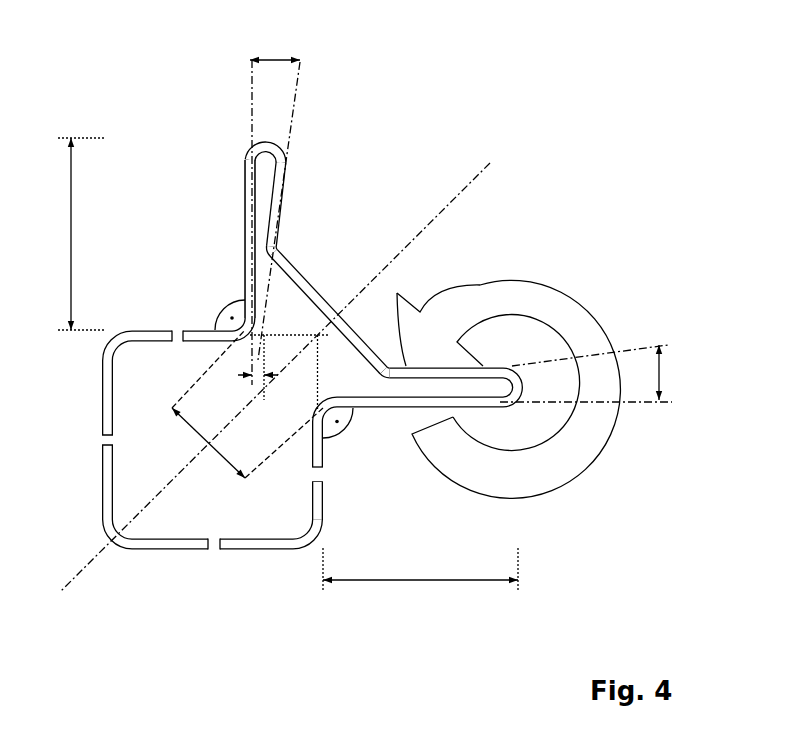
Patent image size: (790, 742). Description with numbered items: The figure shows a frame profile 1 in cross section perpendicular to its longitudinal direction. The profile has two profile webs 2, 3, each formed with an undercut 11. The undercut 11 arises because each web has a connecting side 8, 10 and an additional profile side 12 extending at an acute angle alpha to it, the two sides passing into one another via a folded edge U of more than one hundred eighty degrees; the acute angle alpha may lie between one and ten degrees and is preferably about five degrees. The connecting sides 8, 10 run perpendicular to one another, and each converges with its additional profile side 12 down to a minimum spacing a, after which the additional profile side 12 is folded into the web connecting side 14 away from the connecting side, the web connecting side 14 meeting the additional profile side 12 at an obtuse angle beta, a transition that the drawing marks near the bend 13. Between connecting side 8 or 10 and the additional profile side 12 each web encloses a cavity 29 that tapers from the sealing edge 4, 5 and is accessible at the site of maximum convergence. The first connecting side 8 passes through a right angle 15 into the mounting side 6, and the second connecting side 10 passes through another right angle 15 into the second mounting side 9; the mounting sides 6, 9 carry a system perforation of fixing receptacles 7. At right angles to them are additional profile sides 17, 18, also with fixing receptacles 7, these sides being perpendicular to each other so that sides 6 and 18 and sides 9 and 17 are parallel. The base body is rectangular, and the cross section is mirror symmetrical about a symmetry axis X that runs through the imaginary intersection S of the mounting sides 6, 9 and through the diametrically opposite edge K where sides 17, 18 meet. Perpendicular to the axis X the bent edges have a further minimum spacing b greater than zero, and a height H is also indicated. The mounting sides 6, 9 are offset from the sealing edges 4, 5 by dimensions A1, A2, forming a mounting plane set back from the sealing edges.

The frame profile 1 is at (400, 115).
The profile web 2 is at (220, 175).
The profile web 3 is at (407, 437).
The sealing edge 4 is at (267, 137).
The sealing edge 5 is at (523, 385).
The mounting side 6 is at (151, 326).
The fixing receptacle 7 is at (181, 328).
The connecting side 8 is at (243, 223).
The mounting side 9 is at (328, 503).
The connecting side 10 is at (388, 409).
The undercut 11 is at (288, 238).
The additional profile side 12 is at (284, 193).
The second bend 13 is at (300, 266).
The web connecting side 14 is at (331, 304).
The right angle 15 is at (230, 300).
The additional profile side 17 is at (101, 468).
The additional profile side 18 is at (240, 551).
The cavity 29 is at (265, 172).
The symmetry axis X is at (490, 163).
The edge K is at (112, 557).
The folded edge U is at (241, 148).
The imaginary intersection S is at (318, 339).
The height H is at (648, 404).
The minimum spacing a is at (258, 378).
The minimum spacing b is at (207, 443).
The dimension A1 is at (71, 233).
The dimension A2 is at (418, 579).
The acute angle alpha is at (277, 60).
The obtuse angle beta is at (300, 245).